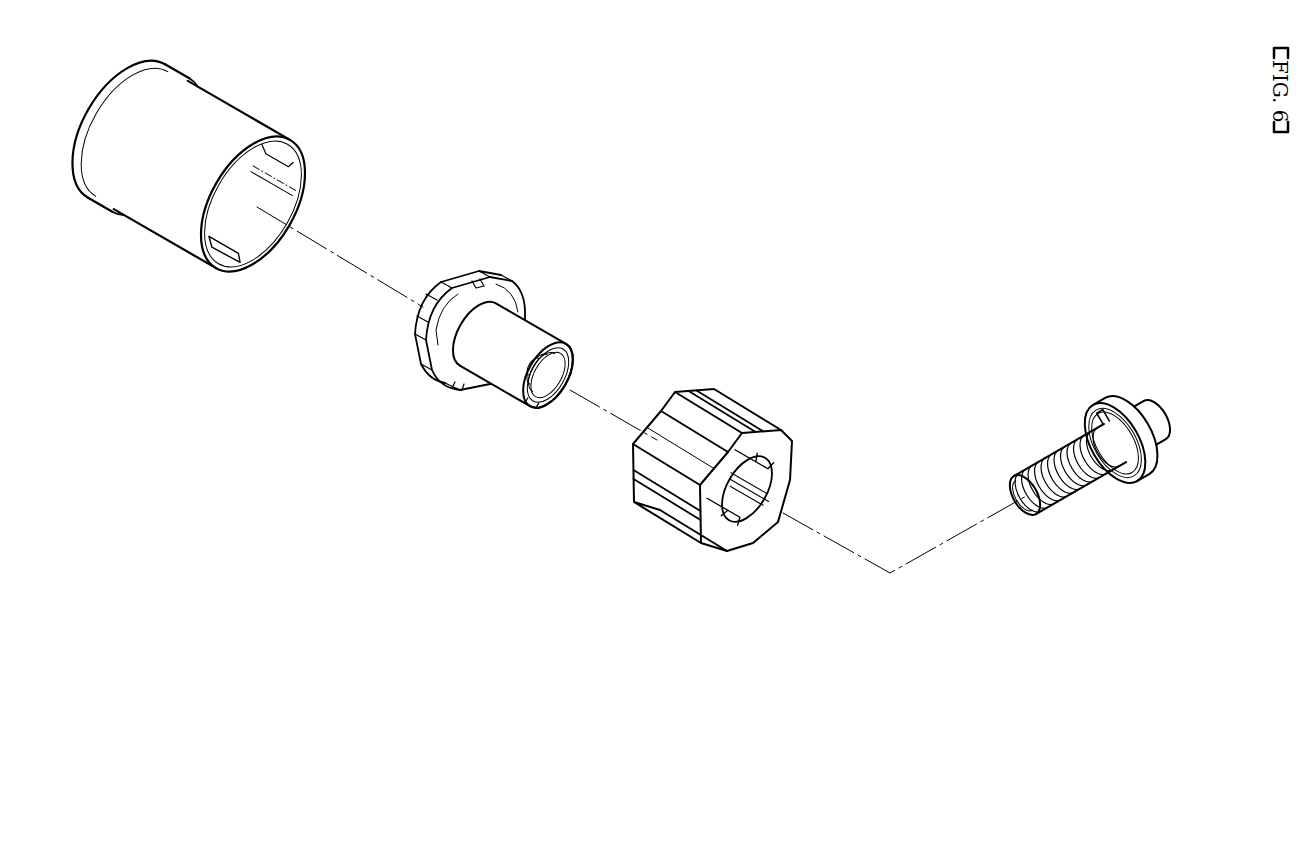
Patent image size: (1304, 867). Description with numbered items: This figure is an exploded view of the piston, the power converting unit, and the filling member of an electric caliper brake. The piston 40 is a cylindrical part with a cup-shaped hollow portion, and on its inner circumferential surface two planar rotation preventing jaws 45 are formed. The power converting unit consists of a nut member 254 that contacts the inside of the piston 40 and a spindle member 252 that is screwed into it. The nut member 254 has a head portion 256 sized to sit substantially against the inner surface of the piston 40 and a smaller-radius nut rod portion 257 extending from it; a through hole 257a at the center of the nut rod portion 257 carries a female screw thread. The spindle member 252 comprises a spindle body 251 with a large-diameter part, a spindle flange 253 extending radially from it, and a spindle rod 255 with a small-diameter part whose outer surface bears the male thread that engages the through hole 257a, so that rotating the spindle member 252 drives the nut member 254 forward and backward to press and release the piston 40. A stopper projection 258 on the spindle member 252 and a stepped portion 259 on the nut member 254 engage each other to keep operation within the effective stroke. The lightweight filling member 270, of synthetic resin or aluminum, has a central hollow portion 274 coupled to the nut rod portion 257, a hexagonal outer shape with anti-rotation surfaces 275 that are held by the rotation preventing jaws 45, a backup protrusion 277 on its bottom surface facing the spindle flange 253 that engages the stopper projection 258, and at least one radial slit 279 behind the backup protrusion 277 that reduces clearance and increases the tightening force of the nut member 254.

The piston 40 is at (189, 178).
The rotation preventing jaw 45 is at (221, 252).
The nut member 254 is at (526, 350).
The head portion 256 is at (510, 292).
The nut rod portion 257 is at (533, 337).
The through hole 257a is at (568, 372).
The stepped portion 259 is at (527, 408).
The filling member 270 is at (758, 462).
The anti-rotation surface 275 is at (712, 406).
The hollow portion 274 is at (762, 467).
The slit 279 is at (777, 513).
The backup protrusion 277 is at (727, 541).
The spindle member 252 is at (1099, 410).
The spindle rod 255 is at (1058, 446).
The spindle flange 253 is at (1110, 407).
The spindle body 251 is at (1152, 410).
The stopper projection 258 is at (1137, 478).